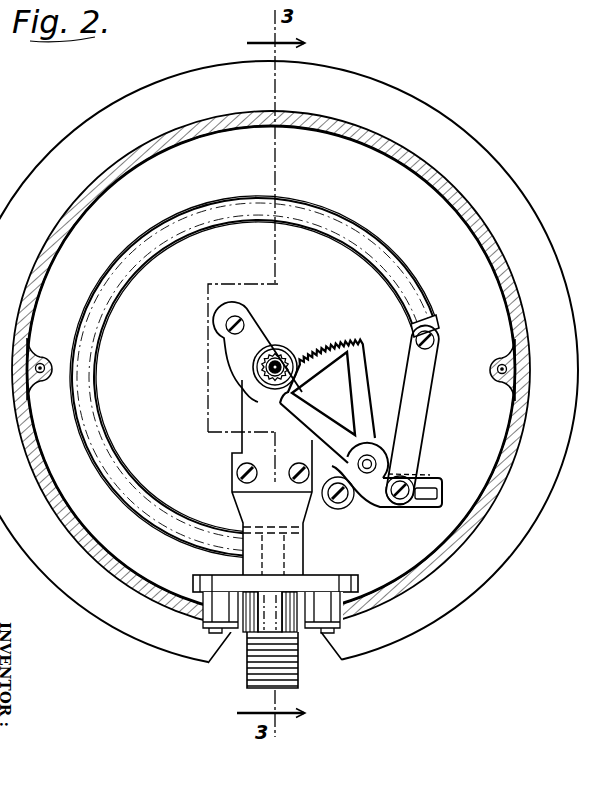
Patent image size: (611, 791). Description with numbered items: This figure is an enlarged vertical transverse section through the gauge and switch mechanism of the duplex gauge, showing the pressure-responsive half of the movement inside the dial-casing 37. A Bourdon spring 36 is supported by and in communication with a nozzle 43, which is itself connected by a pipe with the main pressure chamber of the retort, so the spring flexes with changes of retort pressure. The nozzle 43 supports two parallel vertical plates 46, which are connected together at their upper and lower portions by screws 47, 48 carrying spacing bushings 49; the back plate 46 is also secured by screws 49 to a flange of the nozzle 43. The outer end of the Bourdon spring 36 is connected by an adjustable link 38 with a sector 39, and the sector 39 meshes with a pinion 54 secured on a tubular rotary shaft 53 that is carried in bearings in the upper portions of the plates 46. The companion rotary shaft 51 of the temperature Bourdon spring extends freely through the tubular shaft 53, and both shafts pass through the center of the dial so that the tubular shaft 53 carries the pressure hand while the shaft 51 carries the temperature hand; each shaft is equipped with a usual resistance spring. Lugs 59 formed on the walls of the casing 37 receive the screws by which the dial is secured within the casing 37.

The Bourdon spring 36 is at (388, 236).
The dial-casing 37 is at (289, 362).
The adjustable link 38 is at (426, 400).
The sector 39 is at (334, 406).
The nozzle 43 is at (288, 663).
The parallel vertical plates 46 is at (240, 414).
The screw 47 is at (246, 326).
The screw 48 is at (338, 504).
The spacing bushings / screws 49 is at (298, 482).
The rotary shaft 51 is at (260, 378).
The tubular rotary shaft 53 is at (267, 366).
The pinion 54 is at (286, 353).
The lugs 59 is at (62, 343).